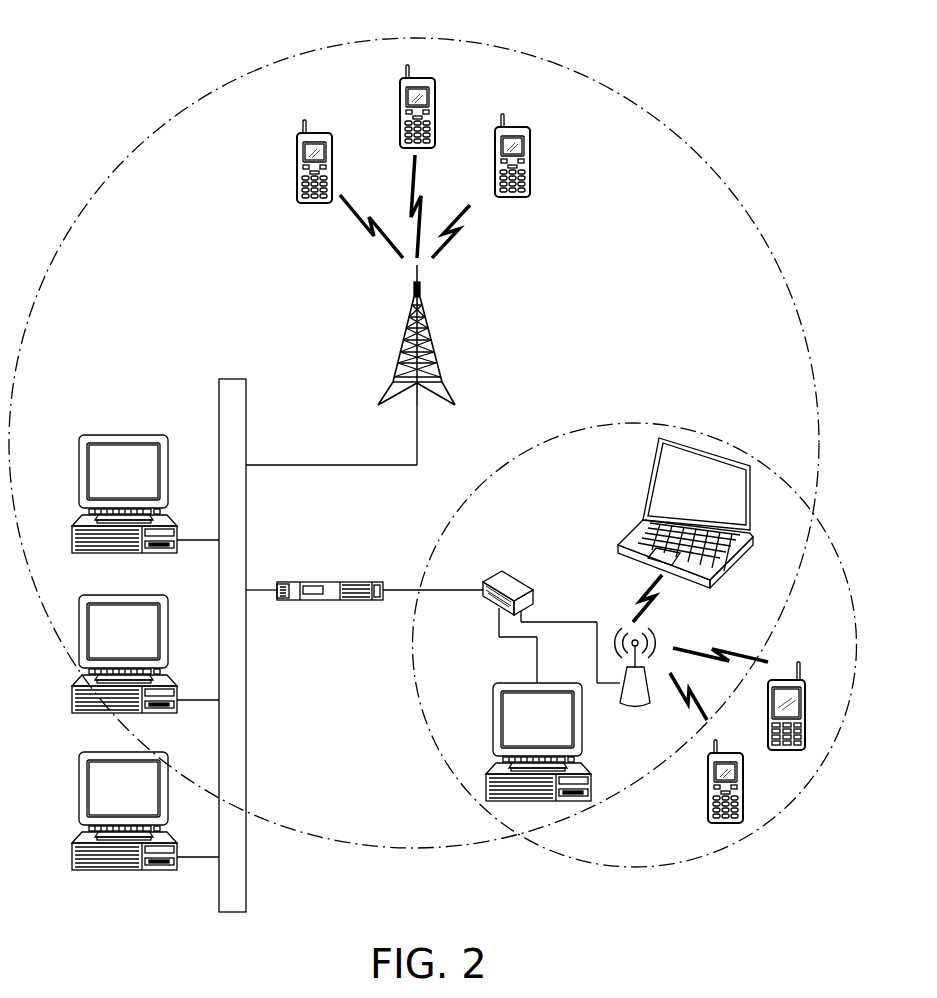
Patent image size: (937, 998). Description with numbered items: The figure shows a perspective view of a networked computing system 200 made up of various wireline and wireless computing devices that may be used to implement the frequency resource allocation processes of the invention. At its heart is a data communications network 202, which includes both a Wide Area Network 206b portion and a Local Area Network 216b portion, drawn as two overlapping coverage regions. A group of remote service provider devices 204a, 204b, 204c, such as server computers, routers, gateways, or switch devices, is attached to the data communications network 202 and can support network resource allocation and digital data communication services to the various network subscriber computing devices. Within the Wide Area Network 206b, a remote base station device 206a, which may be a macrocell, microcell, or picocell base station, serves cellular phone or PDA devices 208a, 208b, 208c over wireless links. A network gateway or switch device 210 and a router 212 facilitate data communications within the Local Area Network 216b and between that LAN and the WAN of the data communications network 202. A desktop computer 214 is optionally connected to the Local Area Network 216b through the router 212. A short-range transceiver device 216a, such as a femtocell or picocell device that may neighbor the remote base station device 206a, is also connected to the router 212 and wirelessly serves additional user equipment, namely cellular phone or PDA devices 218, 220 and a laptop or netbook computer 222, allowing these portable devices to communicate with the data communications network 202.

The networked computing system 200 is at (173, 42).
The data communications network 202 is at (219, 415).
The remote service provider device 204a is at (112, 435).
The remote service provider device 204b is at (118, 595).
The remote service provider device 204c is at (100, 752).
The remote base station device 206a is at (437, 350).
The Wide Area Network 206b is at (728, 190).
The cellular phone or PDA device 208a is at (297, 160).
The cellular phone or PDA device 208b is at (400, 105).
The cellular phone or PDA device 208c is at (530, 157).
The network gateway or switch device 210 is at (335, 582).
The router 212 is at (517, 580).
The desktop computer 214 is at (508, 683).
The short-range transceiver device 216a is at (635, 706).
The Local Area Network 216b is at (582, 427).
The cellular phone or PDA device 218 is at (725, 824).
The cellular phone or PDA device 220 is at (788, 751).
The laptop or netbook computer 222 is at (640, 518).